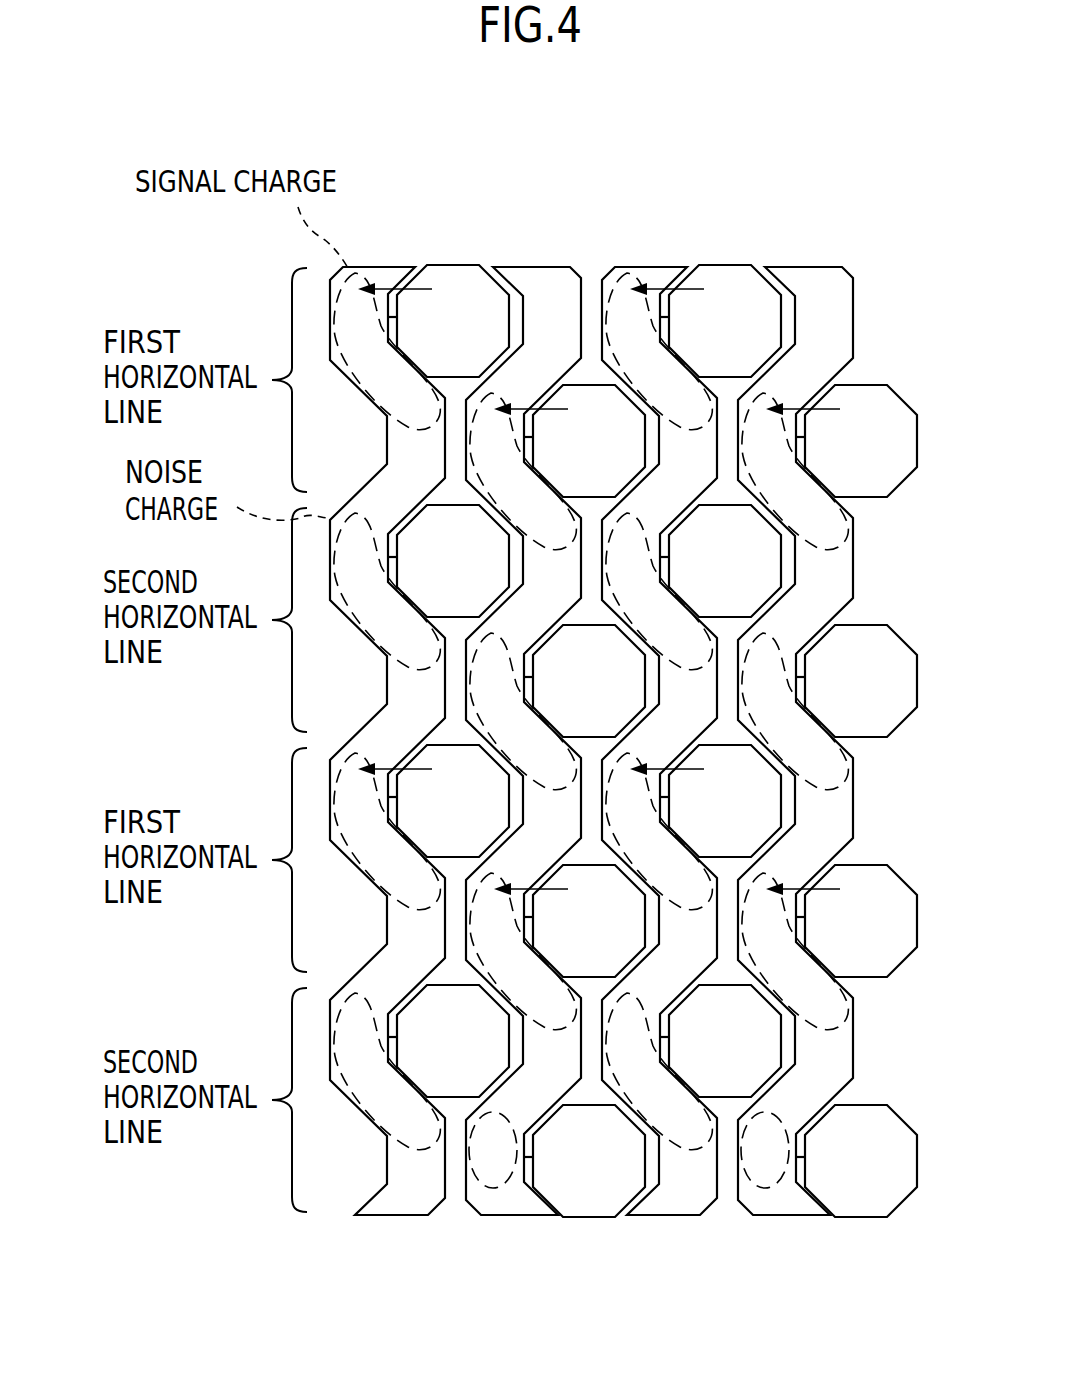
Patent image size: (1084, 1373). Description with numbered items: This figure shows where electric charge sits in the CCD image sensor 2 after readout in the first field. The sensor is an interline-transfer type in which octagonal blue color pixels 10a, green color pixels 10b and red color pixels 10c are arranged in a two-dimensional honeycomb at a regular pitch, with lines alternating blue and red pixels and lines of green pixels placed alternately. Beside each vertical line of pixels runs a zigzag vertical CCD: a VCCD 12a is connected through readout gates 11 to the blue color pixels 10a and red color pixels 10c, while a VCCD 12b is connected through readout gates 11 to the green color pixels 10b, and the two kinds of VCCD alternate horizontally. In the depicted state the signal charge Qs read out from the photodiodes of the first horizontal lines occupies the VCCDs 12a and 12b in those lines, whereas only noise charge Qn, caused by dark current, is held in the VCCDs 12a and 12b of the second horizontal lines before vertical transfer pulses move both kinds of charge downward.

The CCD image sensor 2 is at (845, 188).
The blue color pixel 10a is at (455, 265).
The green color pixel 10b is at (864, 400).
The red color pixel 10c is at (727, 265).
The readout gate 11 is at (425, 276).
The VCCD 12a is at (377, 1217).
The VCCD 12b is at (487, 1217).